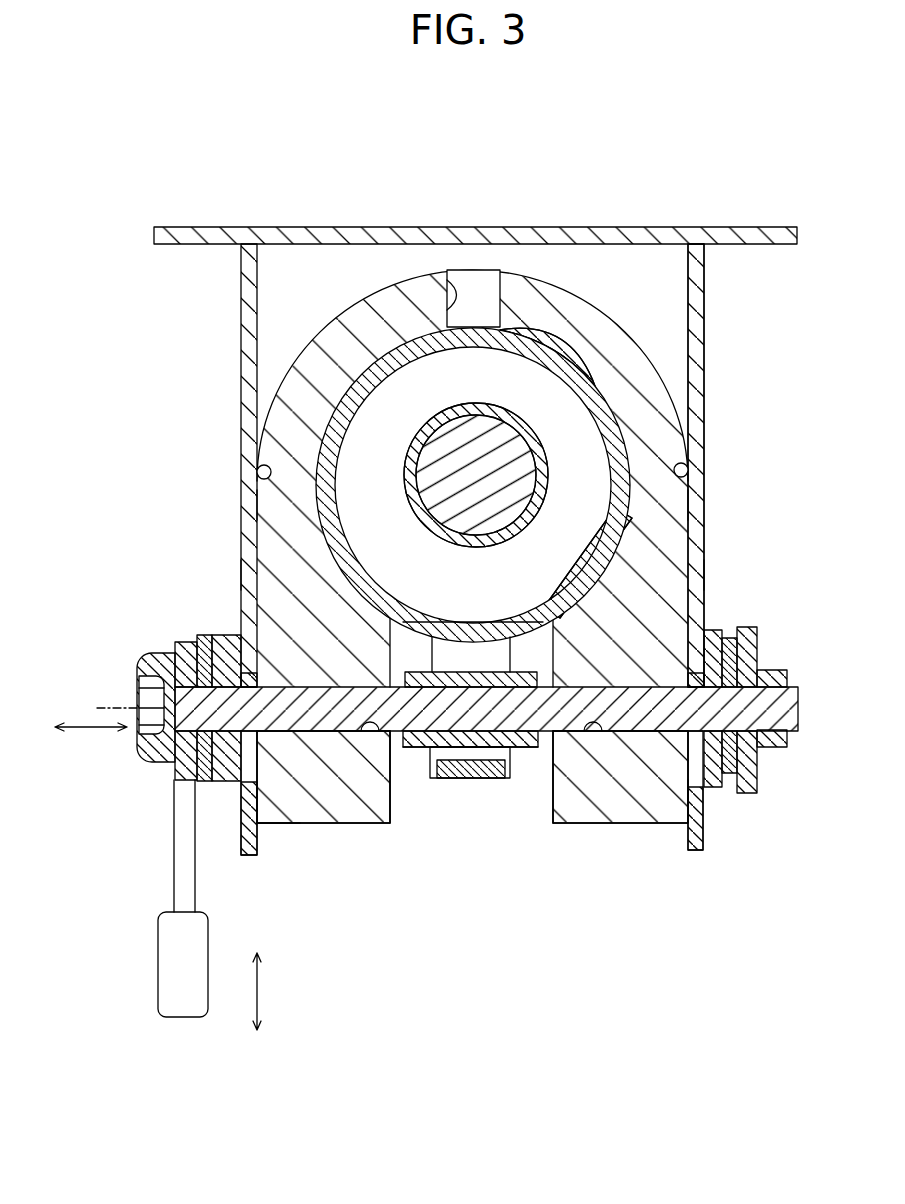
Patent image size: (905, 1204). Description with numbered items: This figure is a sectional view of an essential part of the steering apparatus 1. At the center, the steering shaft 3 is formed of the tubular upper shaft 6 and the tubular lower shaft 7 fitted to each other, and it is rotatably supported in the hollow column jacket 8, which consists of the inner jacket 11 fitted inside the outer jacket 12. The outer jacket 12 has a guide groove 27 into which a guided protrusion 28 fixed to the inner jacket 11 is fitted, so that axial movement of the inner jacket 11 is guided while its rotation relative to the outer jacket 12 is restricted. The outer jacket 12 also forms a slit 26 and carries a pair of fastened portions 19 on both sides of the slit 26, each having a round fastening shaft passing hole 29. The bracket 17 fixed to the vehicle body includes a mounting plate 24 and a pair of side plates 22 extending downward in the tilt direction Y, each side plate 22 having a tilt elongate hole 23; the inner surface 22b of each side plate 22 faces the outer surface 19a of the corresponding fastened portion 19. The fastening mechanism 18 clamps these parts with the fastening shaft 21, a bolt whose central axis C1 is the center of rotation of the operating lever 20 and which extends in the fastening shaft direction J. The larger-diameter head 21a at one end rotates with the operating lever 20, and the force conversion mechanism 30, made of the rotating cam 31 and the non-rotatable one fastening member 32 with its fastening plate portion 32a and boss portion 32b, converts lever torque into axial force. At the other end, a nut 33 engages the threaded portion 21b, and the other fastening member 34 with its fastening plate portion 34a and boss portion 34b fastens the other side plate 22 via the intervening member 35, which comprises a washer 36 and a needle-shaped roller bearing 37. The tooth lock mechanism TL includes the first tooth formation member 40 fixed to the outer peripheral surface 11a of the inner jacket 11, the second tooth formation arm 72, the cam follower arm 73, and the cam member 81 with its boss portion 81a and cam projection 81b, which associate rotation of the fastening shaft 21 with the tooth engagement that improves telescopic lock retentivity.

The steering apparatus 1 is at (732, 188).
The steering shaft 3 is at (196, 372).
The upper shaft 6 is at (437, 467).
The lower shaft 7 is at (410, 452).
The column jacket 8 is at (680, 186).
The inner jacket 11 is at (603, 377).
The outer peripheral surface 11a is at (552, 340).
The outer jacket 12 is at (593, 287).
The bracket 17 is at (715, 283).
The fastening mechanism 18 is at (164, 794).
The fastened portions 19 is at (318, 805).
The outer surface 19a is at (257, 505).
The operating lever 20 is at (165, 968).
The fastening shaft 21 is at (625, 735).
The head 21a is at (152, 764).
The threaded portion 21b is at (786, 748).
The side plates 22 is at (248, 326).
The inner surface 22b is at (257, 472).
The tilt elongate holes 23 is at (241, 572).
The mounting plate 24 is at (345, 236).
The slit 26 is at (404, 790).
The guide groove 27 is at (453, 273).
The guided protrusion 28 is at (479, 304).
The fastening shaft passing hole 29 is at (362, 745).
The force conversion mechanism 30 is at (238, 594).
The rotating cam 31 is at (188, 644).
The one fastening member 32 is at (221, 631).
The fastening plate portion 32a is at (230, 784).
The boss portion 32b is at (279, 823).
The nut 33 is at (776, 671).
The other fastening member 34 is at (714, 630).
The fastening plate portion 34a is at (696, 838).
The boss portion 34b is at (688, 800).
The intervening member 35 is at (795, 860).
The washer 36 is at (750, 795).
The needle-shaped roller bearing 37 is at (729, 785).
The first tooth formation member 40 is at (455, 675).
The second tooth formation arm 72 is at (482, 655).
The cam follower arm 73 is at (468, 778).
The cam member 81 is at (444, 778).
The boss portion 81a is at (525, 748).
The cam projection 81b is at (510, 770).
The tooth lock mechanism TL is at (455, 637).
The central axis C1 is at (114, 704).
The fastening shaft direction J is at (91, 703).
The tilt direction Y is at (260, 992).